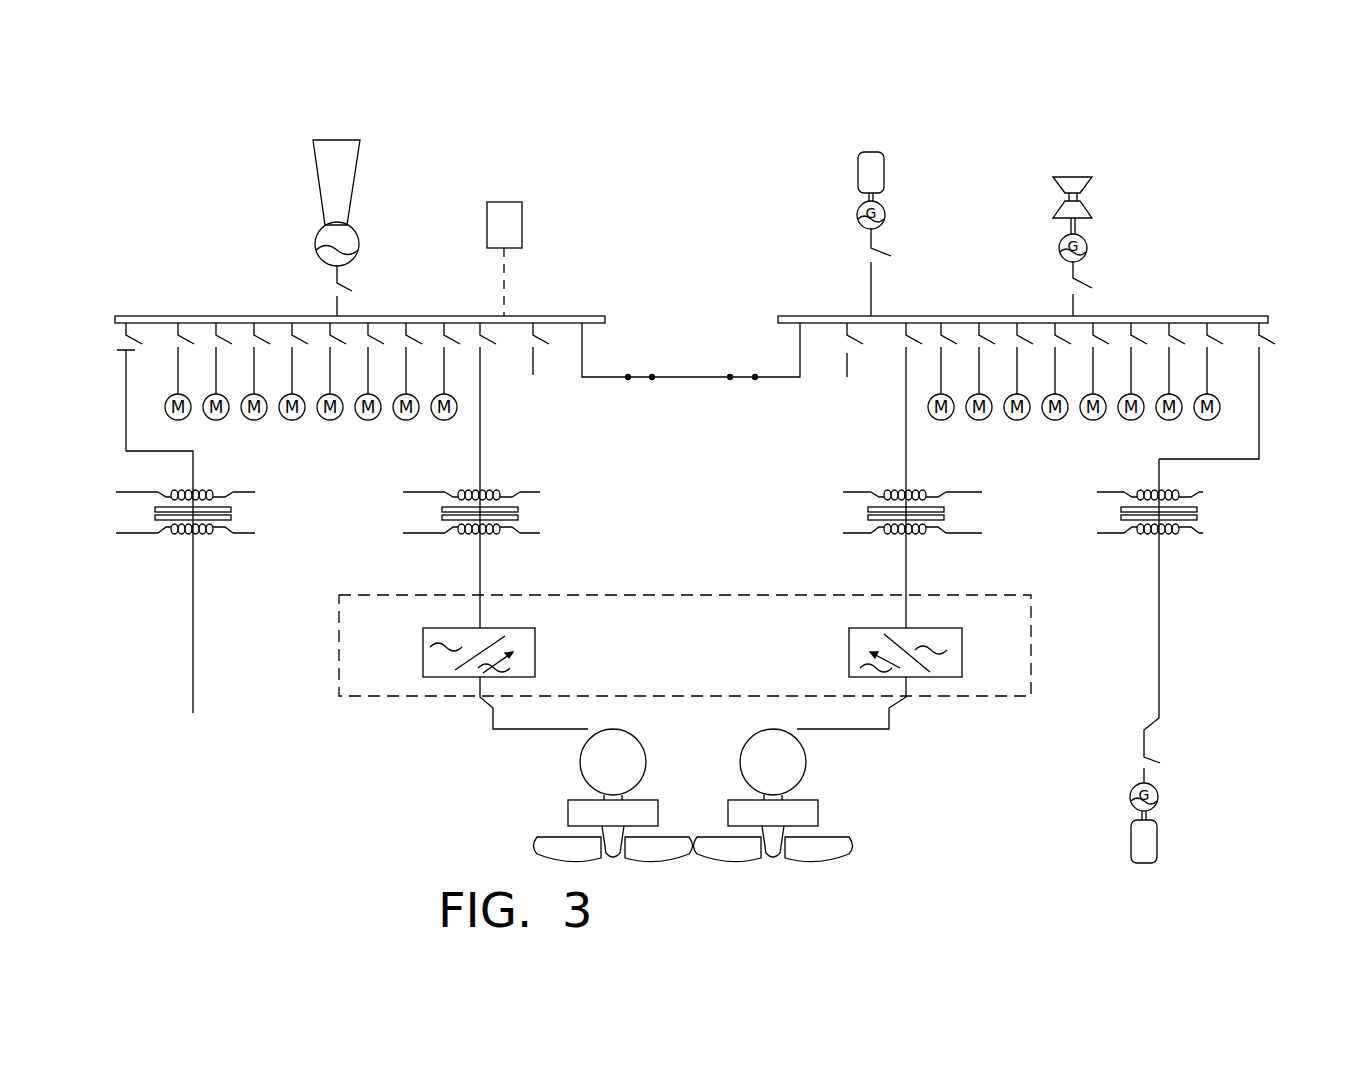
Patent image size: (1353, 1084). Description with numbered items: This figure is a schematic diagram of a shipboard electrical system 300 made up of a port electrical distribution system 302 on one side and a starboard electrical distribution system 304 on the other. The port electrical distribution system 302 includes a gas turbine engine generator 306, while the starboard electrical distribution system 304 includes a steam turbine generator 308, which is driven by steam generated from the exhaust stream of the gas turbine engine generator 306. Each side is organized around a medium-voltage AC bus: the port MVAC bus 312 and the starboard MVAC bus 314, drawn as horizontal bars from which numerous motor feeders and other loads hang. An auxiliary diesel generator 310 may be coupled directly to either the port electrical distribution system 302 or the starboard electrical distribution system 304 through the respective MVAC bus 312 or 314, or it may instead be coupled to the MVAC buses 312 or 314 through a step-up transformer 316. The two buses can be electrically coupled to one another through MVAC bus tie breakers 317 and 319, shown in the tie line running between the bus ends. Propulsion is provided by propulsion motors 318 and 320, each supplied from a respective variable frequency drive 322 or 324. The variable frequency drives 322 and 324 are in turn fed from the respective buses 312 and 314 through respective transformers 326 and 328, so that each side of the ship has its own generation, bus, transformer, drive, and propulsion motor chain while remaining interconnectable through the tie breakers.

The shipboard electrical system 300 is at (683, 158).
The port electrical distribution system 302 is at (495, 175).
The starboard electrical distribution system 304 is at (1128, 190).
The gas turbine engine generator 306 is at (320, 187).
The steam turbine generator 308 is at (1055, 185).
The auxiliary diesel generator 310 is at (522, 218).
The MVAC bus 312 is at (582, 316).
The MVAC bus 314 is at (798, 316).
The step-up transformer 316 is at (1120, 497).
The MVAC bus tie breaker 317 is at (628, 380).
The propulsion motor 318 is at (580, 766).
The MVAC bus tie breaker 319 is at (730, 380).
The propulsion motor 320 is at (806, 768).
The variable frequency drive 322 is at (535, 650).
The variable frequency drive 324 is at (849, 648).
The transformer 326 is at (512, 497).
The transformer 328 is at (878, 497).